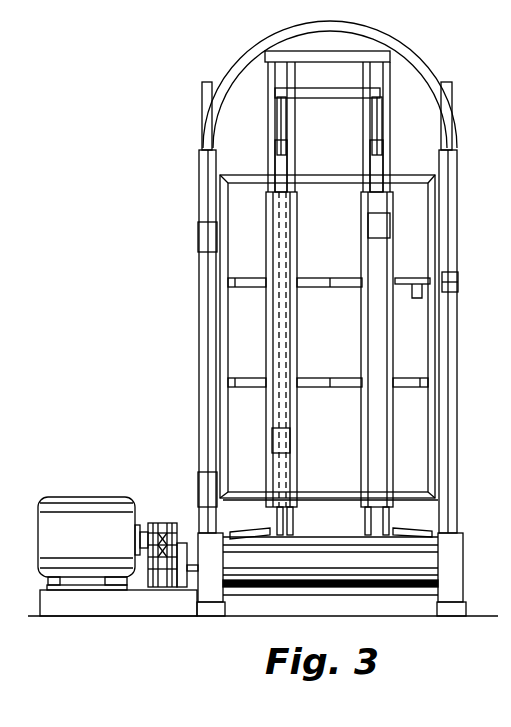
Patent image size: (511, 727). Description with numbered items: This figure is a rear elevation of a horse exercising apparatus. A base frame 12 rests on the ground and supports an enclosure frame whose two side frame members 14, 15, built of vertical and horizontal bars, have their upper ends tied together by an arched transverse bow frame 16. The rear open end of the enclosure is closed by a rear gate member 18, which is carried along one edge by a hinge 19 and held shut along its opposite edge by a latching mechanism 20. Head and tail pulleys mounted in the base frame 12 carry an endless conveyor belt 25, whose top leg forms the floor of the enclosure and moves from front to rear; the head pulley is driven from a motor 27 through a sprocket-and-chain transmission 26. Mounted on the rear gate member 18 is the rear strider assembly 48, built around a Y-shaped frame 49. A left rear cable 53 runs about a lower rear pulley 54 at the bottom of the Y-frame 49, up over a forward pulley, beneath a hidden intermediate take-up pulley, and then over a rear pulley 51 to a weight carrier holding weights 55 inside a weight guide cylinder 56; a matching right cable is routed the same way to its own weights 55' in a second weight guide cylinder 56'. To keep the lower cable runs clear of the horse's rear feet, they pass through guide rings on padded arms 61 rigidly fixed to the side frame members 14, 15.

The base frame 12 is at (465, 556).
The side frame member 14 is at (205, 352).
The side frame member 15 is at (449, 244).
The transverse bow frame 16 is at (408, 62).
The rear gate member 18 is at (252, 286).
The hinge 19 is at (200, 240).
The latching mechanism 20 is at (422, 300).
The endless conveyor belt 25 is at (345, 571).
The sprocket-and-chain transmission 26 is at (177, 520).
The motor 27 is at (102, 541).
The rear strider assembly 48 is at (256, 80).
The Y-shaped frame 49 is at (325, 57).
The rear pulley 51 is at (278, 108).
The left rear cable 53 is at (281, 144).
The lower rear pulley 54 is at (380, 522).
The weights 55 is at (264, 438).
The weights 55' is at (354, 234).
The weight guide cylinder 56 is at (265, 349).
The weight guide cylinder 56' is at (357, 349).
The padded arm 61 is at (256, 531).